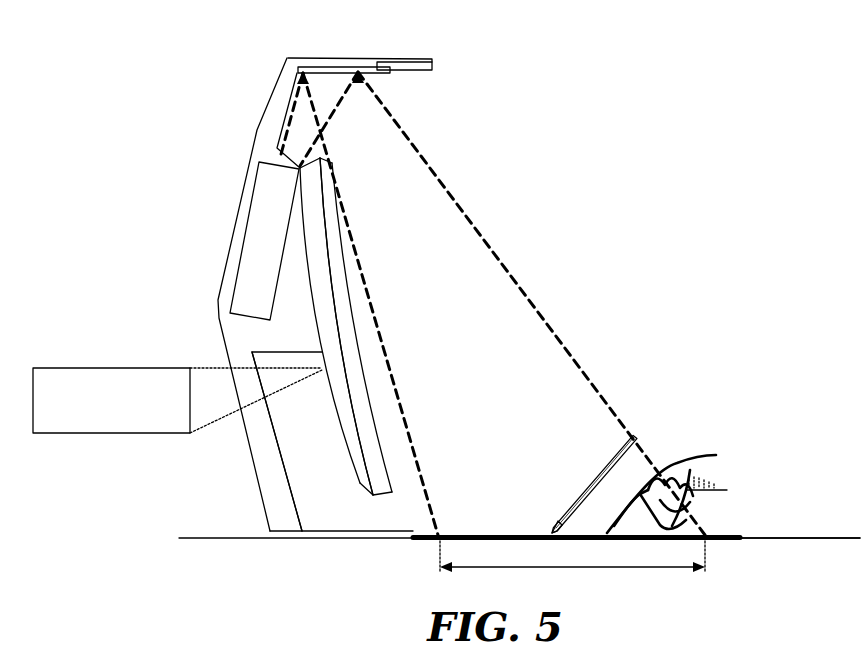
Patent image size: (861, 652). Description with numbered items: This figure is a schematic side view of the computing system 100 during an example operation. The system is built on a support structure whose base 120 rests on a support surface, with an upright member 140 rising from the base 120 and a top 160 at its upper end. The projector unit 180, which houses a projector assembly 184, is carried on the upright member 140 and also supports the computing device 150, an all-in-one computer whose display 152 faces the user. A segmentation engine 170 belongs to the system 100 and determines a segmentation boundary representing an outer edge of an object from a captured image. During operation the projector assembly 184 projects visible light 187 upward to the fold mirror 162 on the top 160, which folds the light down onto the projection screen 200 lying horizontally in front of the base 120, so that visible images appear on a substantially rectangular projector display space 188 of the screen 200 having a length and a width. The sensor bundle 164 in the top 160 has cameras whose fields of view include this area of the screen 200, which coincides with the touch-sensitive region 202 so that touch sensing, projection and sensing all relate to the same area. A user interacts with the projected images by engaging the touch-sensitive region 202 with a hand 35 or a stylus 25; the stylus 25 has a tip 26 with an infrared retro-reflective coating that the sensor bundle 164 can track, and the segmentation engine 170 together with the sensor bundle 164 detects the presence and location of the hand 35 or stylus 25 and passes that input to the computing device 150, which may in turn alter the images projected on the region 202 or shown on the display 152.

The computing system 100 is at (622, 174).
The base 120 is at (290, 546).
The upright member 140 is at (212, 203).
The computing device 150 is at (331, 418).
The display 152 is at (368, 373).
The top 160 is at (281, 50).
The fold mirror 162 is at (347, 59).
The sensor bundle 164 is at (403, 61).
The segmentation engine 170 is at (107, 433).
The projector unit 180 is at (236, 331).
The projector assembly 184 is at (250, 177).
The visible light 187 is at (413, 136).
The projector display space 188 is at (536, 525).
The projection screen 200 is at (742, 546).
The touch-sensitive region 202 is at (466, 534).
The stylus 25 is at (602, 473).
The tip 26 is at (553, 517).
The hand 35 is at (690, 455).